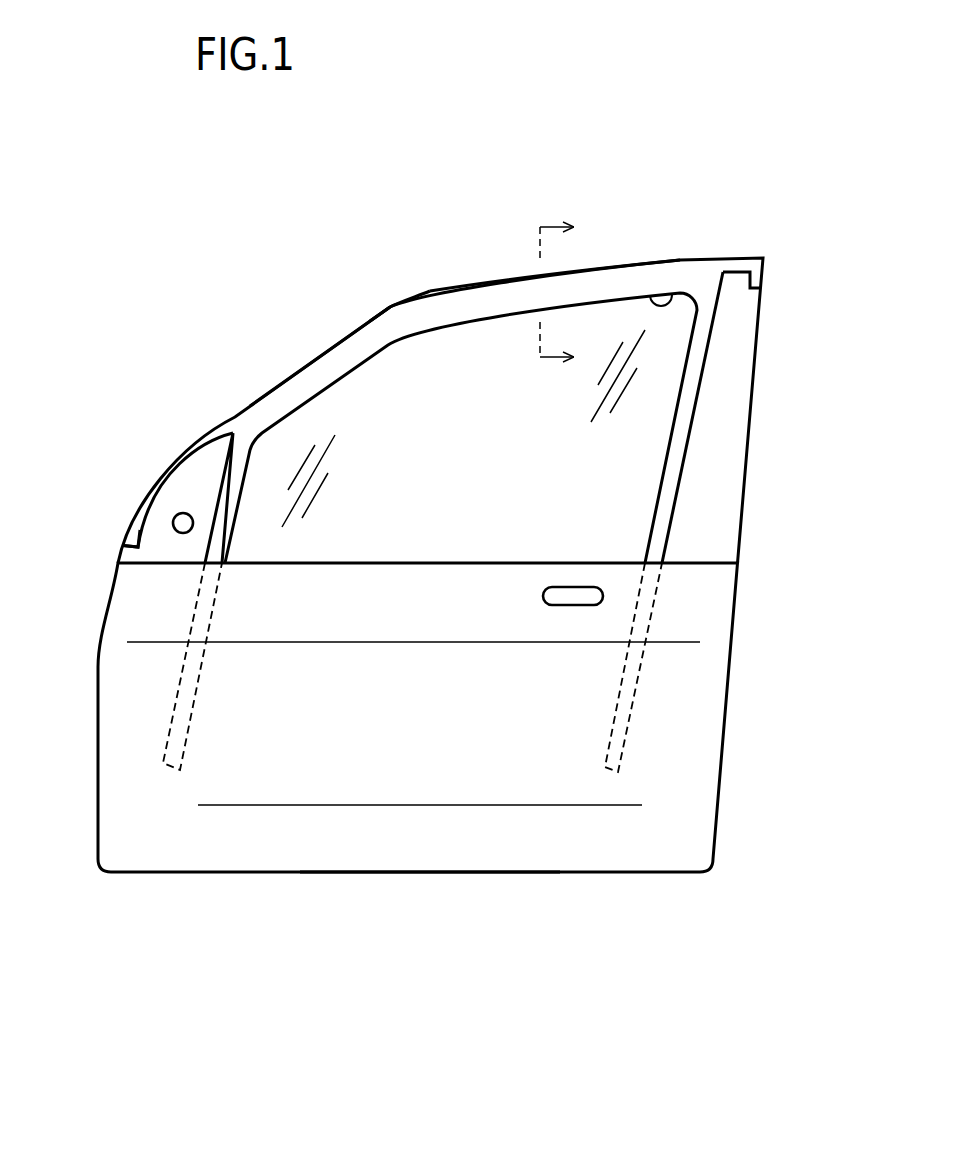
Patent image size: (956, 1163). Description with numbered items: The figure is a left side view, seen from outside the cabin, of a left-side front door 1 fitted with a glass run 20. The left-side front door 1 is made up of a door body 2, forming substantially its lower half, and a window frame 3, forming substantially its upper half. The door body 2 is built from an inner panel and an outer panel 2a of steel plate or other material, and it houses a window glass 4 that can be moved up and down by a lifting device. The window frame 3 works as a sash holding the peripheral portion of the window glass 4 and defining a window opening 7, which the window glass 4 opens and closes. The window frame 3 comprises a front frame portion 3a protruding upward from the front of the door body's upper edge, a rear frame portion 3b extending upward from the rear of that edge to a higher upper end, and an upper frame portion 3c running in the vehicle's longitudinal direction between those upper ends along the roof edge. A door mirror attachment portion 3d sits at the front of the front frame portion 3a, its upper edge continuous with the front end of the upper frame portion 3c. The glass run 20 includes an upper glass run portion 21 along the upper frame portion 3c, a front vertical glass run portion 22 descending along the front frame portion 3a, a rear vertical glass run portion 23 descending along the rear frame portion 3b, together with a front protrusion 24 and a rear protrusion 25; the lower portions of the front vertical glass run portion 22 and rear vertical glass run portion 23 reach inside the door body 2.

The left-side front door 1 is at (370, 223).
The door body 2 is at (448, 770).
The outer panel 2a is at (412, 850).
The window frame 3 is at (436, 486).
The front frame portion 3a is at (233, 478).
The rear frame portion 3b is at (730, 445).
The upper frame portion 3c is at (498, 300).
The door mirror attachment portion 3d is at (183, 495).
The window glass 4 is at (605, 327).
The window opening 7 is at (672, 295).
The glass run 20 is at (368, 342).
The upper glass run portion 21 is at (418, 313).
The front vertical glass run portion 22 is at (213, 555).
The rear vertical glass run portion 23 is at (663, 517).
The front protrusion 24 is at (130, 530).
The rear protrusion 25 is at (737, 265).